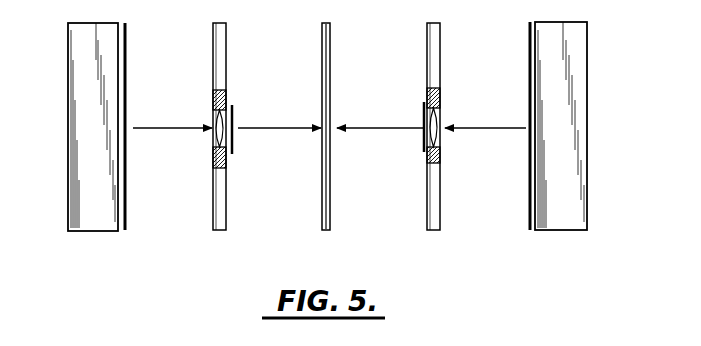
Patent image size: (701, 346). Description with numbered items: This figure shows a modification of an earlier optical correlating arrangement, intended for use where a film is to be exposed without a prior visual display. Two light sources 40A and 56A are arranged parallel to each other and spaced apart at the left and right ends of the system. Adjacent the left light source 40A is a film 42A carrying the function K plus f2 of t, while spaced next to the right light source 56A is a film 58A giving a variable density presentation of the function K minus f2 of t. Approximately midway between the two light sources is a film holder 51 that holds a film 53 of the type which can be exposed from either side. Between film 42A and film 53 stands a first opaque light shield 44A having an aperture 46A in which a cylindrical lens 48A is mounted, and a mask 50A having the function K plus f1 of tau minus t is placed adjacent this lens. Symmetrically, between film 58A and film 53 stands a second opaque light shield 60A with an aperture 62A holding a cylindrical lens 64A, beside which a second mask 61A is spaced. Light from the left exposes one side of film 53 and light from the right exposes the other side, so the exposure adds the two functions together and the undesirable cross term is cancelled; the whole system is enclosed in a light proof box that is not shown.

The light source 40A is at (68, 83).
The film 42A is at (127, 229).
The first opaque light shield 44A is at (226, 229).
The aperture 46A is at (214, 112).
The lens 48A is at (213, 140).
The mask 50A is at (234, 113).
The film holder 51 is at (326, 231).
The film 53 is at (330, 208).
The light source 56A is at (587, 229).
The film 58A is at (526, 25).
The second opaque light shield 60A is at (440, 229).
The second mask 61A is at (423, 111).
The aperture 62A is at (441, 109).
The cylindrical lens 64A is at (441, 143).